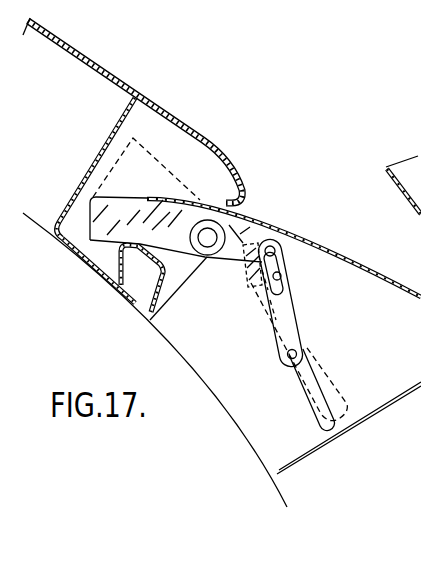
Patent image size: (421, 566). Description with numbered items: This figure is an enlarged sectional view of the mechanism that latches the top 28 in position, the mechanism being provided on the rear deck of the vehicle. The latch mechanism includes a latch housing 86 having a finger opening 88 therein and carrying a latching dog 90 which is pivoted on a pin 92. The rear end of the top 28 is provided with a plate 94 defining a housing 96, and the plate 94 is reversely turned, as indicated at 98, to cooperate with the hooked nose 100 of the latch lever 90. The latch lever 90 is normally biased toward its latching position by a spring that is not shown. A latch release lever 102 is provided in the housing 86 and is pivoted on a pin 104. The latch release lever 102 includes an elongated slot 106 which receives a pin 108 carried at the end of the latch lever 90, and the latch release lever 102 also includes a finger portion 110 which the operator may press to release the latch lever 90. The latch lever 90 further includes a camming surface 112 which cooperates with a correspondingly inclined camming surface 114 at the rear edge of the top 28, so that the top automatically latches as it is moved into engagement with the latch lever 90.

The top 28 is at (76, 49).
The latch housing 86 is at (316, 233).
The finger opening 88 is at (378, 412).
The latching dog 90 is at (163, 198).
The pin 92 is at (207, 257).
The plate 94 is at (97, 161).
The housing 96 is at (152, 112).
The reversely turned portion 98 is at (100, 271).
The hooked nose 100 is at (117, 286).
The latch release lever 102 is at (297, 306).
The pin 104 is at (297, 352).
The elongated slot 106 is at (282, 285).
The pin 108 is at (272, 246).
The finger portion 110 is at (325, 387).
The camming surface 112 is at (80, 254).
The camming surface 114 is at (175, 292).